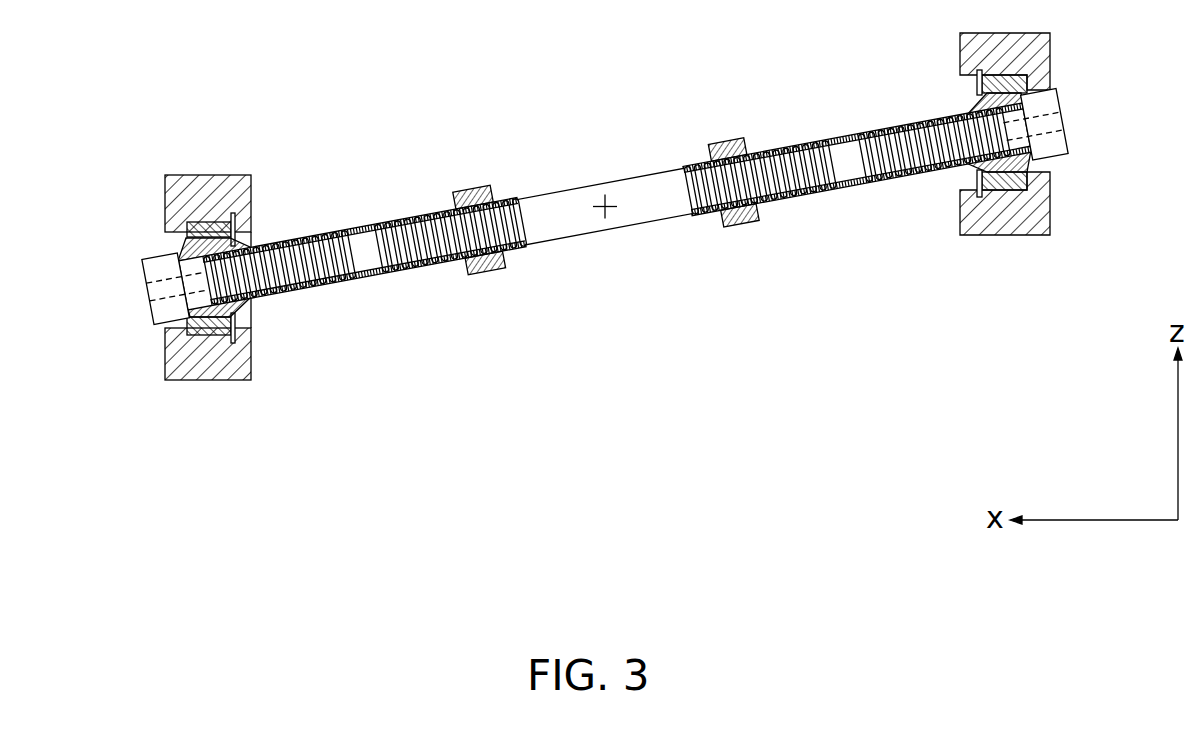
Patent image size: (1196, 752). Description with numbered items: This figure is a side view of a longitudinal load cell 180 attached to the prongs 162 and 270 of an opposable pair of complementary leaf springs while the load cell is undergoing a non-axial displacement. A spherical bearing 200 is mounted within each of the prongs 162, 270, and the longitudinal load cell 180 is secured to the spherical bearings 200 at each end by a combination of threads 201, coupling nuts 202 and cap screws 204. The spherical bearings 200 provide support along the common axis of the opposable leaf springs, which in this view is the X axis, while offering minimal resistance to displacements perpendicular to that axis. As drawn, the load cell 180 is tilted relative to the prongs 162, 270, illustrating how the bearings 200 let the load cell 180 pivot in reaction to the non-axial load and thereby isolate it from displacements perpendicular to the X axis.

The prong 162 is at (165, 370).
The prong 270 is at (1050, 62).
The longitudinal load cell 180 is at (639, 223).
The spherical bearing 200 is at (186, 240).
The threads 201 is at (500, 202).
The coupling nut 202 is at (415, 272).
The cap screw 204 is at (144, 271).